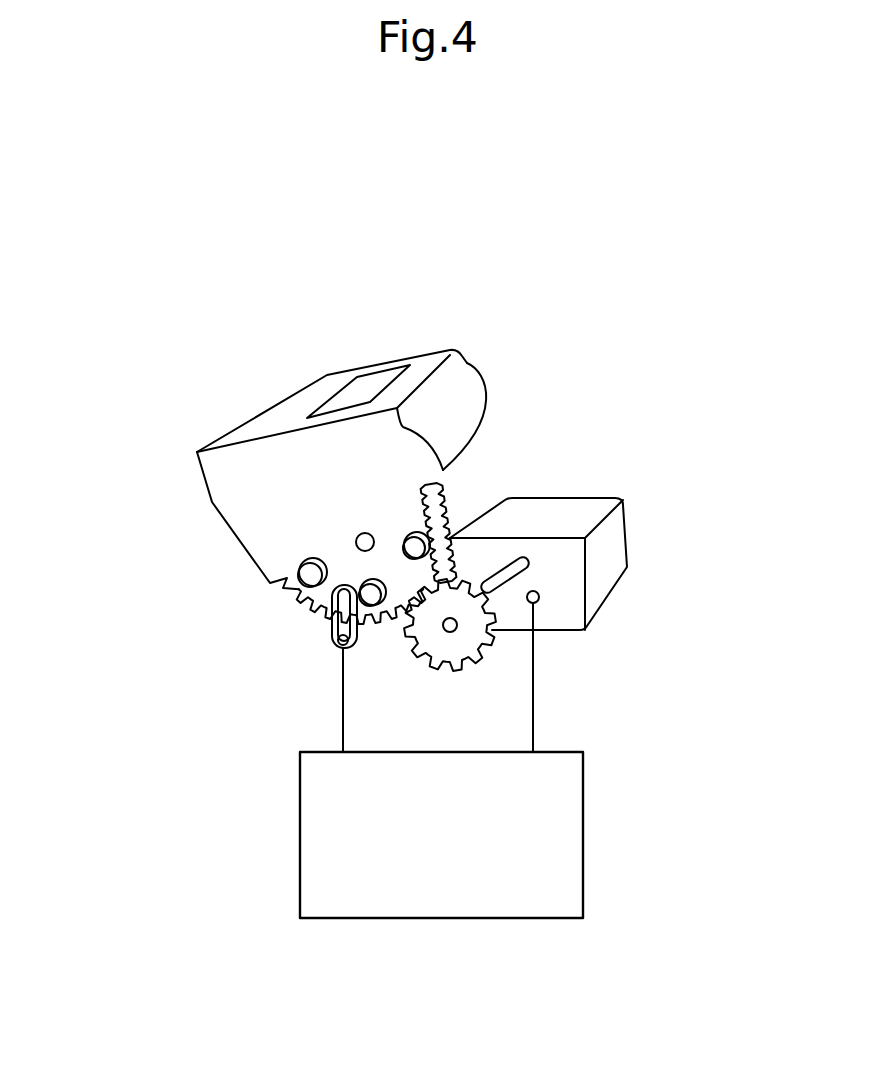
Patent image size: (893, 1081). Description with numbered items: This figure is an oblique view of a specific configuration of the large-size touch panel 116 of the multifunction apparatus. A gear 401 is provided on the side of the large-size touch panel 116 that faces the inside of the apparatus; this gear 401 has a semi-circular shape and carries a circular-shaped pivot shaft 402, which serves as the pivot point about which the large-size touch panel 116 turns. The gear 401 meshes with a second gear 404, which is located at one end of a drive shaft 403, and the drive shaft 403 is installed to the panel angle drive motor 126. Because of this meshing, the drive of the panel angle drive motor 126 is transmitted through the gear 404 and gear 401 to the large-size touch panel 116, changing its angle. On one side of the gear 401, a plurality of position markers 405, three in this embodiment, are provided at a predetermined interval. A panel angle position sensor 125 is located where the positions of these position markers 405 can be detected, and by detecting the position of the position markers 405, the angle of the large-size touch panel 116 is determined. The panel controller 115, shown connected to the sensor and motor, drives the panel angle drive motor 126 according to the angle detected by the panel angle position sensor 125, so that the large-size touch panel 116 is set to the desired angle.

The large-size touch panel 116 is at (385, 363).
The pivot shaft 402 is at (347, 538).
The position markers 405 is at (300, 566).
The panel angle position sensor 125 is at (332, 636).
The gear 401 is at (450, 503).
The gear 404 is at (443, 663).
The panel angle drive motor 126 is at (627, 533).
The drive shaft 403 is at (528, 570).
The panel controller 115 is at (583, 836).